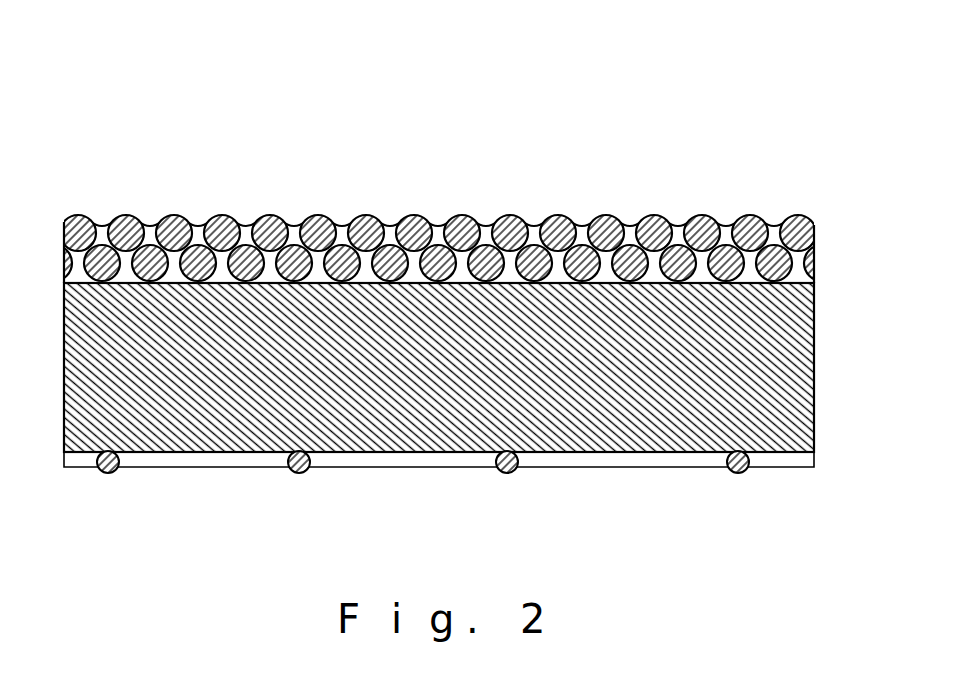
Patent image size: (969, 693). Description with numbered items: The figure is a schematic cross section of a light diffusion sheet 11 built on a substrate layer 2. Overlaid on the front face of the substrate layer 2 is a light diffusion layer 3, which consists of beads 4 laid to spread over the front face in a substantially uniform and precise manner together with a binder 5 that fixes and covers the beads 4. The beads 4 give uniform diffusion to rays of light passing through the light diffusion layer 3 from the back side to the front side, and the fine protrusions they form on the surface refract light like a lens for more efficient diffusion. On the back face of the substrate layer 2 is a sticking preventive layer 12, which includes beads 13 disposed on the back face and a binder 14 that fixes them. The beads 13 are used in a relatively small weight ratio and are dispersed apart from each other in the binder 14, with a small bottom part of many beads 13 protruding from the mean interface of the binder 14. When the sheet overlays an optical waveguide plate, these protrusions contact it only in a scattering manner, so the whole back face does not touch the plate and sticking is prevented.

The light diffusion sheet 11 is at (157, 201).
The substrate layer 2 is at (814, 368).
The light diffusion layer 3 is at (814, 249).
The beads 4 is at (320, 228).
The binder 5 is at (485, 235).
The sticking preventive layer 12 is at (814, 458).
The beads 13 is at (507, 473).
The binder 14 is at (392, 458).